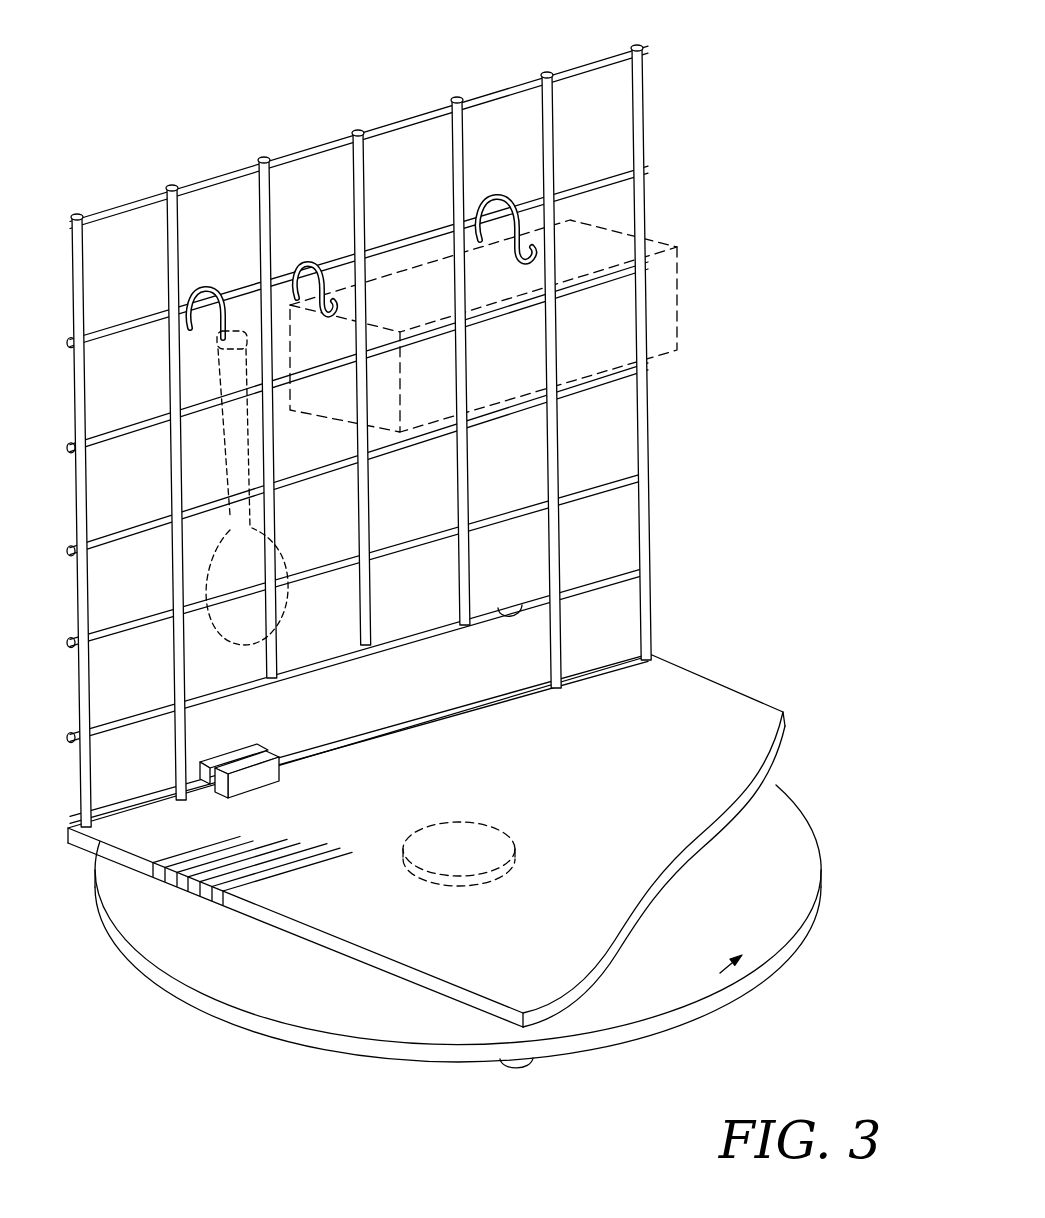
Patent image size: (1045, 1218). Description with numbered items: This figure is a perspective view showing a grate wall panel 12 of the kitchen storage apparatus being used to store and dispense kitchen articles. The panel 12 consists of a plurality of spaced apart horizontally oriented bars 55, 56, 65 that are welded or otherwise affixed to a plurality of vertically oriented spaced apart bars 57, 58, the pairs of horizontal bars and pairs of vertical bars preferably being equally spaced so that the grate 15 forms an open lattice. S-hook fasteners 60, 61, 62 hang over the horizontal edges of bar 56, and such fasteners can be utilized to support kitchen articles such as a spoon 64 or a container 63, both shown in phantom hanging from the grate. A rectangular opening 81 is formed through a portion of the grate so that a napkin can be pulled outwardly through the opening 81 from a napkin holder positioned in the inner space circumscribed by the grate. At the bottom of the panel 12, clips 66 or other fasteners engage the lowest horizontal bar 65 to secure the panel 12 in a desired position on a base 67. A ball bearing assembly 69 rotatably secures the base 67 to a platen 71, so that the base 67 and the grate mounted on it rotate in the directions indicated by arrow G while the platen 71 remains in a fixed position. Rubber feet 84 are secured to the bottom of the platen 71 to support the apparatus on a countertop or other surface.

The panel 12 is at (411, 98).
The wire grid panel 15 is at (359, 420).
The horizontally oriented bar 55 is at (237, 172).
The horizontally oriented bar 56 is at (140, 318).
The vertically oriented bar 57 is at (88, 247).
The vertically oriented bar 58 is at (178, 243).
The S-hook fastener 60 is at (226, 284).
The S-hook fastener 61 is at (318, 263).
The S-hook fastener 62 is at (501, 198).
The container 63 is at (679, 314).
The spoon 64 is at (286, 578).
The horizontally oriented bar 65 is at (463, 706).
The clip 66 is at (270, 752).
The base 67 is at (479, 841).
The ball bearing assembly 69 is at (522, 860).
The platen 71 is at (214, 992).
The rectangular opening 81 is at (527, 596).
The rubber feet 84 is at (533, 1069).
The arrow G is at (580, 1017).